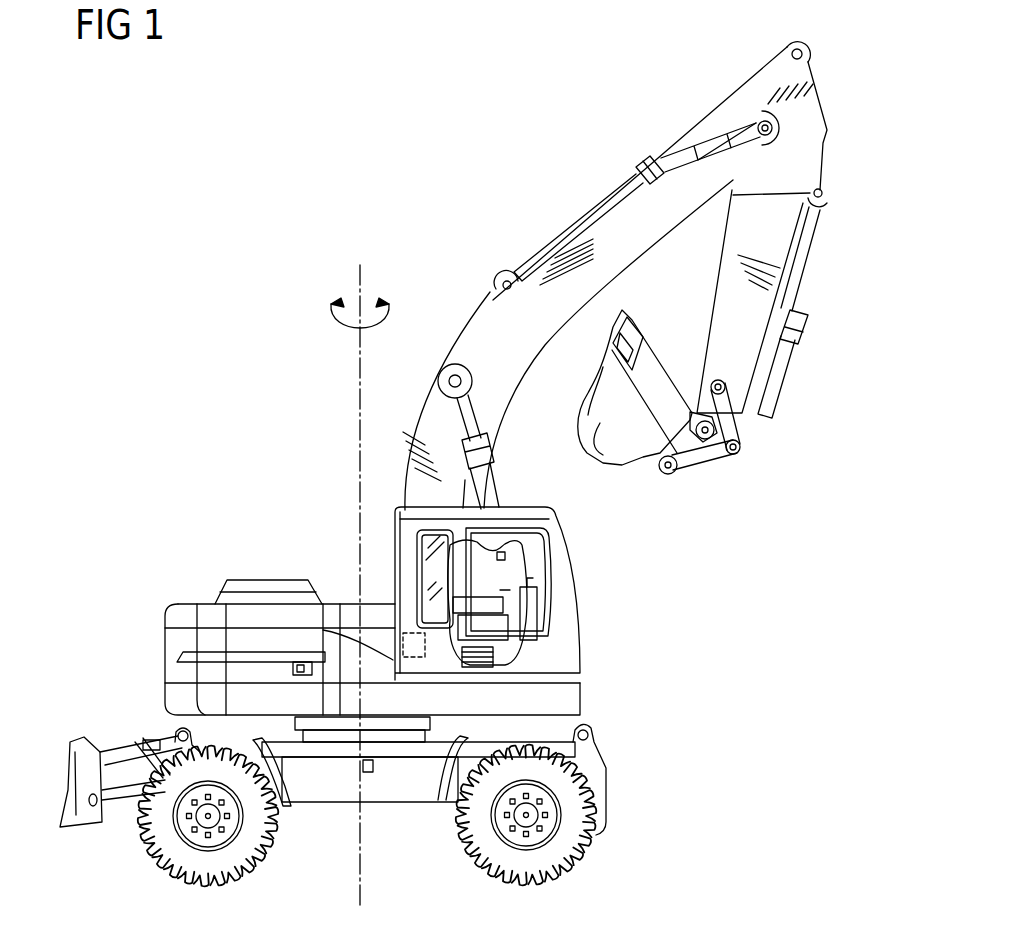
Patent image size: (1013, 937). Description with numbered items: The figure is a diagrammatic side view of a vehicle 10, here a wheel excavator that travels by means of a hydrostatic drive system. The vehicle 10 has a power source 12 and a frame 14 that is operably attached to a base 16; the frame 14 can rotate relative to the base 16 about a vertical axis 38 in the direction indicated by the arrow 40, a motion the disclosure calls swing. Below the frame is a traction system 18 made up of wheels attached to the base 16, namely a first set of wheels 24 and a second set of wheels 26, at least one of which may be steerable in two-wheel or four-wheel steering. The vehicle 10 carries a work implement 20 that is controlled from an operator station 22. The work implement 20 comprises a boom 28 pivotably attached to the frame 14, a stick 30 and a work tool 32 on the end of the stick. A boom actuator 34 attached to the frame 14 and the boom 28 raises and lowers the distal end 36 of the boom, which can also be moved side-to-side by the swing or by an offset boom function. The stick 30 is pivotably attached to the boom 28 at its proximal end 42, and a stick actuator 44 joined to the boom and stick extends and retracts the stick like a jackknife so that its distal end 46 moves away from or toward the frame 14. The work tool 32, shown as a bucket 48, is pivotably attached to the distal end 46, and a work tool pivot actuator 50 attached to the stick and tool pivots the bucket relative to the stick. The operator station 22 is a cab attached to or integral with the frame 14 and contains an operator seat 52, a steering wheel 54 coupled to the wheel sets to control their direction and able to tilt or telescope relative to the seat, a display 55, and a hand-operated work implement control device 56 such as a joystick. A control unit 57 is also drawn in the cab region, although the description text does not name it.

The vehicle 10 is at (207, 403).
The power source 12 is at (263, 637).
The frame 14 is at (168, 633).
The base 16 is at (590, 762).
The traction system 18 is at (432, 850).
The work implement 20 is at (393, 165).
The operator station 22 is at (525, 569).
The first set of wheels 24 is at (145, 833).
The second set of wheels 26 is at (563, 842).
The boom 28 is at (517, 320).
The stick 30 is at (767, 252).
The work tool 32 is at (674, 363).
The boom actuator 34 is at (490, 483).
The distal end 36 is at (732, 129).
The axis 38 is at (358, 396).
The arrow 40 is at (343, 302).
The proximal end 42 is at (810, 43).
The stick actuator 44 is at (610, 196).
The distal end 46 is at (707, 453).
The bucket 48 is at (620, 453).
The work tool pivot actuator 50 is at (793, 280).
The operator seat 52 is at (540, 657).
The steering wheel 54 is at (493, 635).
The display 55 is at (533, 578).
The hand-operated work implement control device 56 is at (500, 552).
The control unit 57 is at (393, 627).